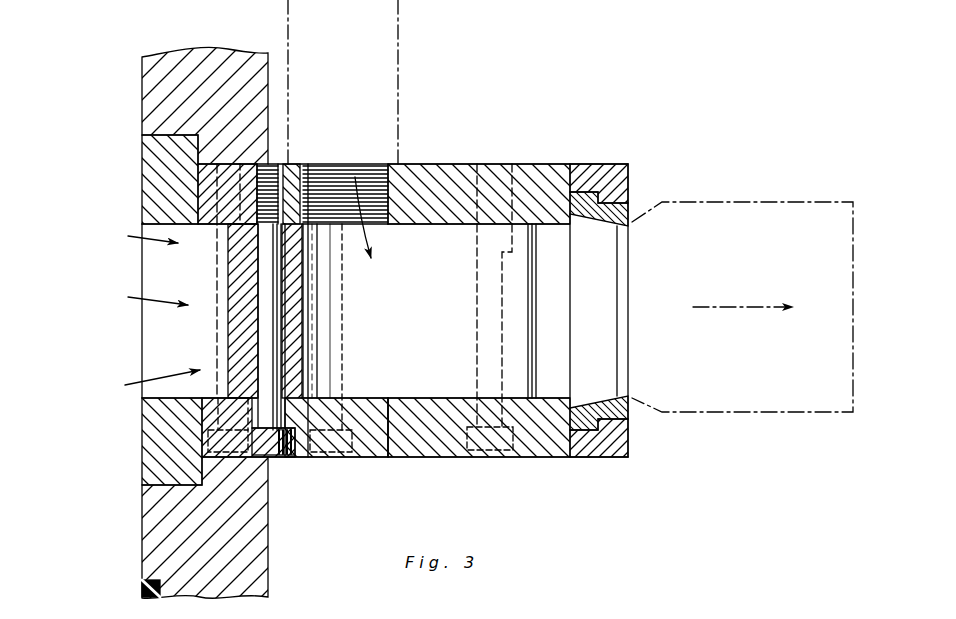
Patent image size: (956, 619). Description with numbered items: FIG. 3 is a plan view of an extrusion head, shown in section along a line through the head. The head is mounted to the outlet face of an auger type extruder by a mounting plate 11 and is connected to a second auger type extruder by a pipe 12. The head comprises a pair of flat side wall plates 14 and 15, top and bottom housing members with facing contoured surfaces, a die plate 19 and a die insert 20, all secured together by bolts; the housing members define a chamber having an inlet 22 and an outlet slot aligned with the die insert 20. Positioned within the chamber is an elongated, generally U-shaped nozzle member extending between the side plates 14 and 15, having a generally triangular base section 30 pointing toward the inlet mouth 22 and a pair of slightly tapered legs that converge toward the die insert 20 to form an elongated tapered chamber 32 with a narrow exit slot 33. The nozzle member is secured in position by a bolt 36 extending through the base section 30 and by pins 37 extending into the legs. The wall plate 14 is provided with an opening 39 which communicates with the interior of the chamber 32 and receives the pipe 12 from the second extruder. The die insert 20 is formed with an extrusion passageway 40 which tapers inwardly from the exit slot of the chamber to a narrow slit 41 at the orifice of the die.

The mounting plate 11 is at (147, 528).
The pipe 12 is at (397, 55).
The side wall plate 14 is at (473, 178).
The side wall plate 15 is at (533, 447).
The die plate 19 is at (622, 442).
The die insert 20 is at (632, 212).
The inlet 22 is at (160, 262).
The triangular base section 30 is at (238, 318).
The tapered chamber 32 is at (383, 372).
The exit slot 33 is at (515, 328).
The bolt 36 is at (272, 440).
The pins 37 is at (518, 188).
The opening 39 is at (398, 164).
The extrusion passageway 40 is at (632, 193).
The narrow slit 41 is at (624, 262).